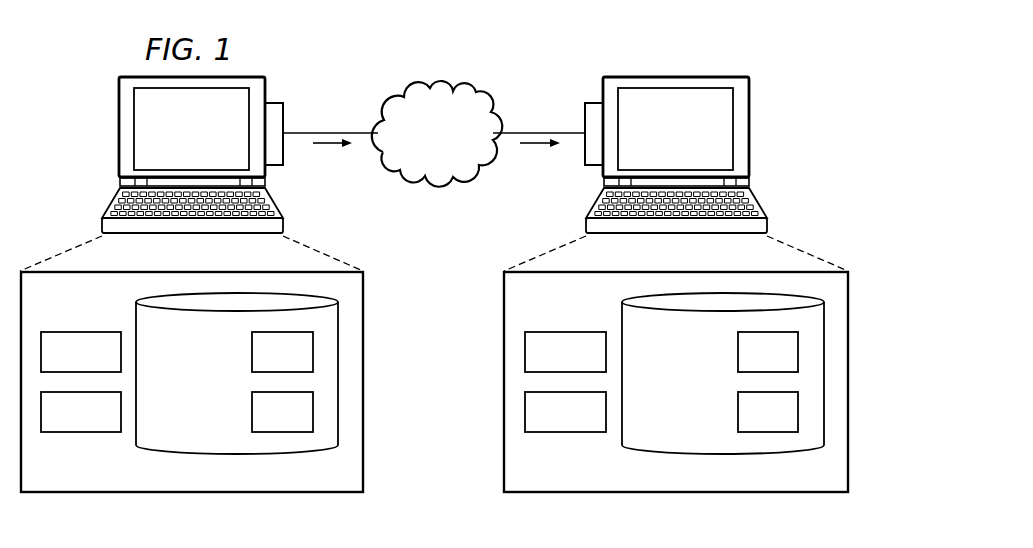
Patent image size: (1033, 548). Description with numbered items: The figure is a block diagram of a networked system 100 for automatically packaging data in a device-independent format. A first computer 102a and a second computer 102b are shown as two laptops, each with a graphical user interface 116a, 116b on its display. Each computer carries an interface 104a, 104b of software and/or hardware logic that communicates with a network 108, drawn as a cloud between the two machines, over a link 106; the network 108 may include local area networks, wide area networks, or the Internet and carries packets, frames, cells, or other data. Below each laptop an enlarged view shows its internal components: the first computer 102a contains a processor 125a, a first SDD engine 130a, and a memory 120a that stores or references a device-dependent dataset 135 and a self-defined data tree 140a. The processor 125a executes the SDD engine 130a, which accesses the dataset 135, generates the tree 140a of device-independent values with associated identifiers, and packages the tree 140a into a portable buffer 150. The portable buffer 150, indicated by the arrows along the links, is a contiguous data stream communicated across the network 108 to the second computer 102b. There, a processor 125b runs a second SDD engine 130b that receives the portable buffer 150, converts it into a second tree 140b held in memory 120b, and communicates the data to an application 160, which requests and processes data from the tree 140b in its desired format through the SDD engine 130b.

The networked system 100 is at (532, 40).
The first computer 102a is at (118, 118).
The second computer 102b is at (752, 118).
The interface 104a is at (272, 103).
The interface 104b is at (587, 103).
The link 106 is at (333, 131).
The network 108 is at (454, 144).
The graphical user interface 116a is at (214, 142).
The graphical user interface 116b is at (698, 142).
The portable buffer 150 is at (326, 146).
The memory 120a is at (205, 394).
The memory 120b is at (692, 394).
The processor 125a is at (80, 331).
The processor 125b is at (564, 331).
The first SDD engine 130a is at (80, 433).
The second SDD engine 130b is at (564, 433).
The dataset 135 is at (252, 412).
The self-defined data tree 140a is at (252, 350).
The second tree 140b is at (738, 350).
The application 160 is at (738, 412).